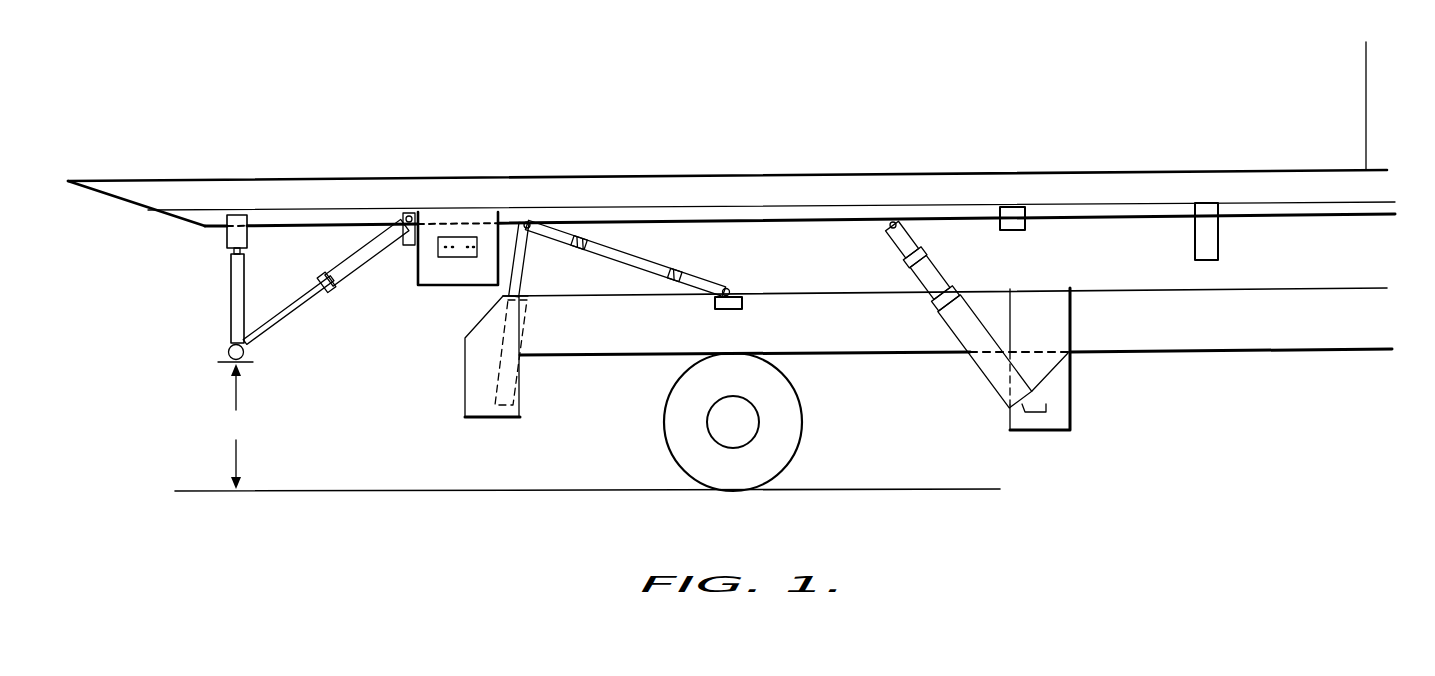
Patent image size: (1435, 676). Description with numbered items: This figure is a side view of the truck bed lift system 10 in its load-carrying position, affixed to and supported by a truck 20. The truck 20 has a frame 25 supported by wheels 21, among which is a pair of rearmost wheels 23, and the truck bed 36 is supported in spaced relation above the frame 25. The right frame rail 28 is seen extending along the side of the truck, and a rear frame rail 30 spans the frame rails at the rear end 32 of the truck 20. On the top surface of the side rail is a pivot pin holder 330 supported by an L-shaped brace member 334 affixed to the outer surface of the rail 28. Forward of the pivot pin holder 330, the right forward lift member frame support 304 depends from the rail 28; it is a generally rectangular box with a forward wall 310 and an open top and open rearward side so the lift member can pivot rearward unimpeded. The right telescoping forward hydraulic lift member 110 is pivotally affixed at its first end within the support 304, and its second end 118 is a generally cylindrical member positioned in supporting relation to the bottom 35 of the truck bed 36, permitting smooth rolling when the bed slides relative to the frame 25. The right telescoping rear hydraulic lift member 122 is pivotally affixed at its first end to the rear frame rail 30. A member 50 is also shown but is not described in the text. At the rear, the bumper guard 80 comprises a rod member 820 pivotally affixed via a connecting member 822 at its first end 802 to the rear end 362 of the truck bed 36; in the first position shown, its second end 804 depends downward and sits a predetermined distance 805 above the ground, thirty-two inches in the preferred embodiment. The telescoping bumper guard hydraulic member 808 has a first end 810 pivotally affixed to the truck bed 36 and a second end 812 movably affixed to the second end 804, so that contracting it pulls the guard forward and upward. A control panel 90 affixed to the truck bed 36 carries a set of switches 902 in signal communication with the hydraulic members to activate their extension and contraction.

The truck bed lift system 10 is at (1222, 500).
The truck 20 is at (1357, 335).
The wheels 21 is at (770, 465).
The rearmost wheels 23 is at (708, 472).
The frame 25 is at (1283, 338).
The right frame rail 28 is at (1216, 350).
The rear frame rail 30 is at (470, 405).
The rear end 32 is at (574, 410).
The bottom of truck bed 35 is at (737, 220).
The truck bed 36 is at (855, 187).
The actuator strut 50 is at (688, 252).
The bumper guard 80 is at (231, 321).
The control panel 90 is at (430, 288).
The right telescoping forward hydraulic lift member 110 is at (993, 373).
The second end of right forward lift member 118 is at (894, 220).
The right telescoping rear hydraulic lift member 122 is at (506, 378).
The right forward lift member frame support 304 is at (1058, 387).
The forward wall 310 is at (500, 418).
The pivot pin holder 330 is at (730, 291).
The L-shaped brace member 334 is at (745, 310).
The rear end of truck bed 362 is at (270, 170).
The first end of bumper guard 802 is at (223, 252).
The second end of bumper guard 804 is at (250, 352).
The predetermined distance 805 is at (231, 426).
The telescoping bumper guard hydraulic member 808 is at (355, 260).
The first end of bumper guard hydraulic member 810 is at (409, 212).
The second end of bumper guard hydraulic member 812 is at (247, 338).
The rod member 820 is at (195, 364).
The connecting member 822 is at (231, 281).
The switches 902 is at (462, 258).